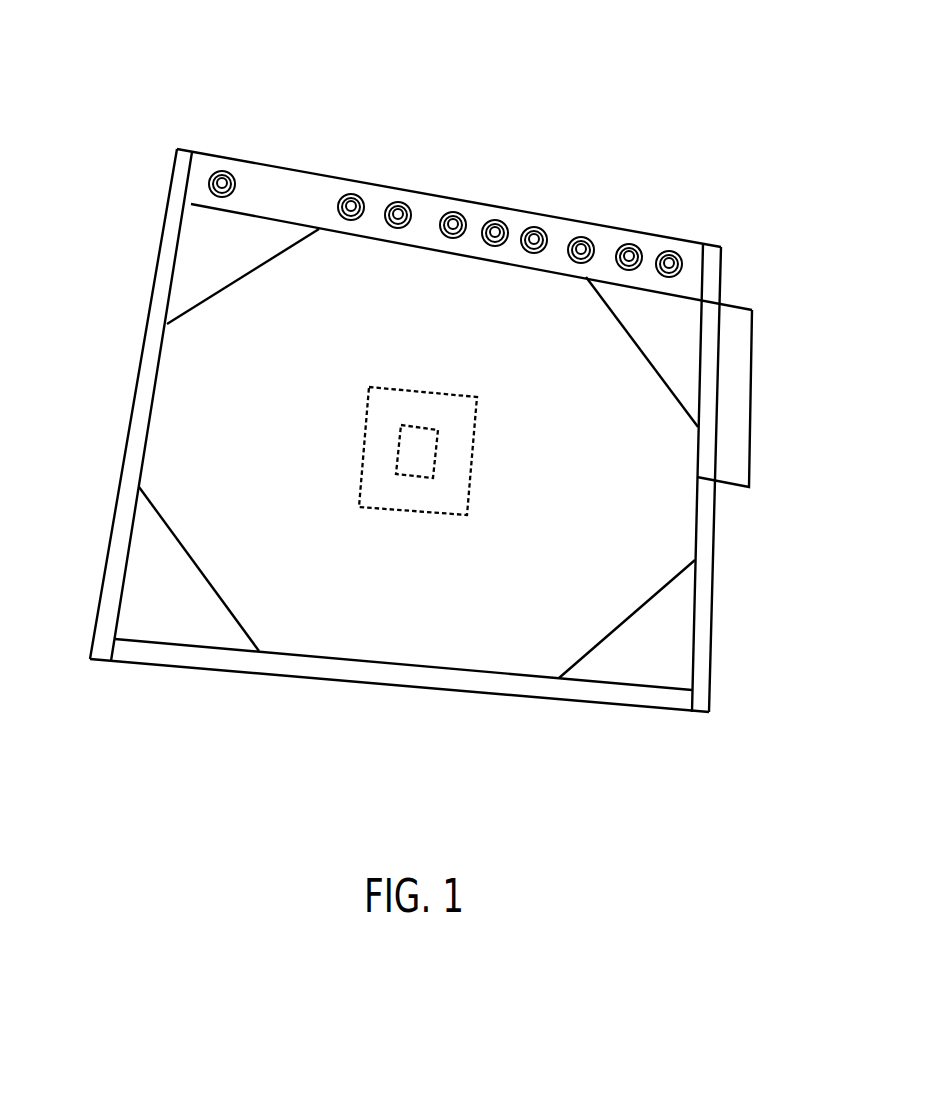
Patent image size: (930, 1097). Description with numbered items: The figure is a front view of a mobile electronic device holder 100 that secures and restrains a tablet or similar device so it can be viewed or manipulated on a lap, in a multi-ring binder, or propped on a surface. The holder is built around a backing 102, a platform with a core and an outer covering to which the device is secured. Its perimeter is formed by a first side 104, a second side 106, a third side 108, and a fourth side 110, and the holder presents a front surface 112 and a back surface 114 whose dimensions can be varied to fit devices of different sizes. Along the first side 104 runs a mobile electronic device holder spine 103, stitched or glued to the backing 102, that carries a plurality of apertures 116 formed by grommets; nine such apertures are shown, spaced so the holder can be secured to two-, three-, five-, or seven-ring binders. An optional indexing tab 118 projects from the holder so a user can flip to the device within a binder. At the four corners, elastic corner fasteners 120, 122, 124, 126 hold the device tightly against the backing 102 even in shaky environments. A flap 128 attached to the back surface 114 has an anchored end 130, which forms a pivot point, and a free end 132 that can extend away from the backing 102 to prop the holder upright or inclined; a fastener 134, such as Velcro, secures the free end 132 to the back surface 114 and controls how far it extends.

The mobile electronic device holder 100 is at (673, 82).
The backing 102 is at (477, 339).
The mobile electronic device holder spine 103 is at (176, 171).
The first side 104 is at (222, 152).
The second side 106 is at (714, 598).
The third side 108 is at (493, 693).
The fourth side 110 is at (137, 394).
The front surface 112 is at (355, 622).
The back surface 114 is at (433, 632).
The apertures 116 is at (238, 165).
The indexing tab 118 is at (751, 455).
The corner fastener 120 is at (235, 263).
The corner fastener 122 is at (652, 318).
The corner fastener 124 is at (652, 633).
The corner fastener 126 is at (177, 592).
The flap 128 is at (473, 443).
The anchored end 130 is at (398, 385).
The free end 132 is at (433, 513).
The fastener 134 is at (400, 447).